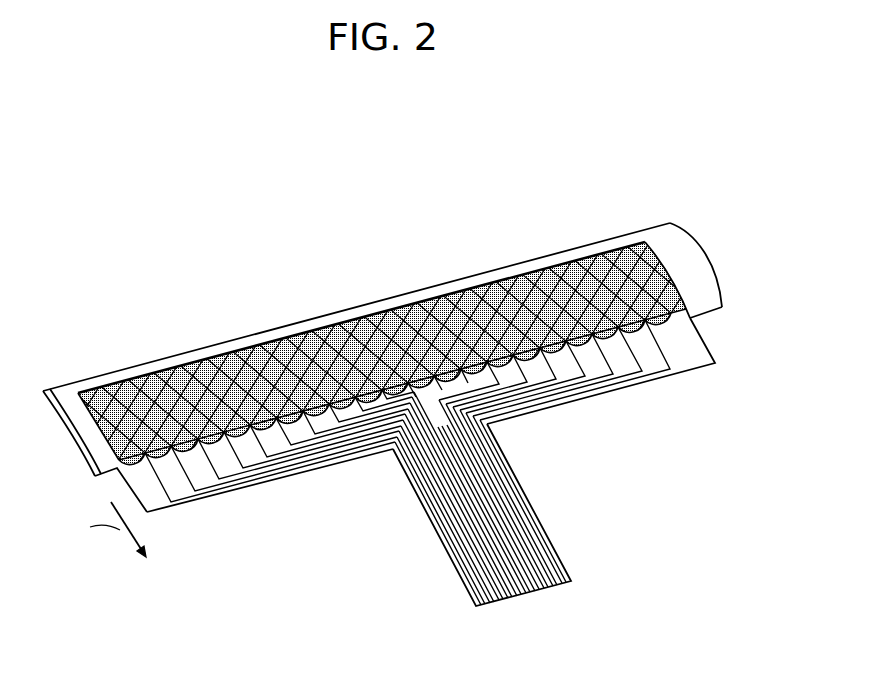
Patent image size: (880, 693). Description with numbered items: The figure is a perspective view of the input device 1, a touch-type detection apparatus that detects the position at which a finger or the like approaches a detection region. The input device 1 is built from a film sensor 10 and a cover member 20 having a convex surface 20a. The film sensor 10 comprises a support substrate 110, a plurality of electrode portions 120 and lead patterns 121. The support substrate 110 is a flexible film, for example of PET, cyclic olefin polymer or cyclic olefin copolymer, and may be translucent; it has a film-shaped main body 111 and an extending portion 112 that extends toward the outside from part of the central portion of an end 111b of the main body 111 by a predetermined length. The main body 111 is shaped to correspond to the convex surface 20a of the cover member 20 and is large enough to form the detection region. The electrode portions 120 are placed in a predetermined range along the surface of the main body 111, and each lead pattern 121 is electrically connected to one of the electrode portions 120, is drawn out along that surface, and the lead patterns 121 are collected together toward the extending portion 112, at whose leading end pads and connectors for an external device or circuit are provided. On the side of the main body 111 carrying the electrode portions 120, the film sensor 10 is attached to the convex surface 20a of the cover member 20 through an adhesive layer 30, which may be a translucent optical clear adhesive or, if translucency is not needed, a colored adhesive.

The input device 1 is at (648, 166).
The film sensor 10 is at (512, 277).
The cover member 20 is at (700, 233).
The convex surface 20a is at (696, 277).
The adhesive layer 30 is at (353, 320).
The support substrate 110 is at (663, 380).
The main body 111 is at (693, 343).
The end of the main body 111b is at (343, 463).
The extending portion 112 is at (530, 508).
The electrode portions 120 is at (108, 390).
The lead patterns 121 is at (233, 493).